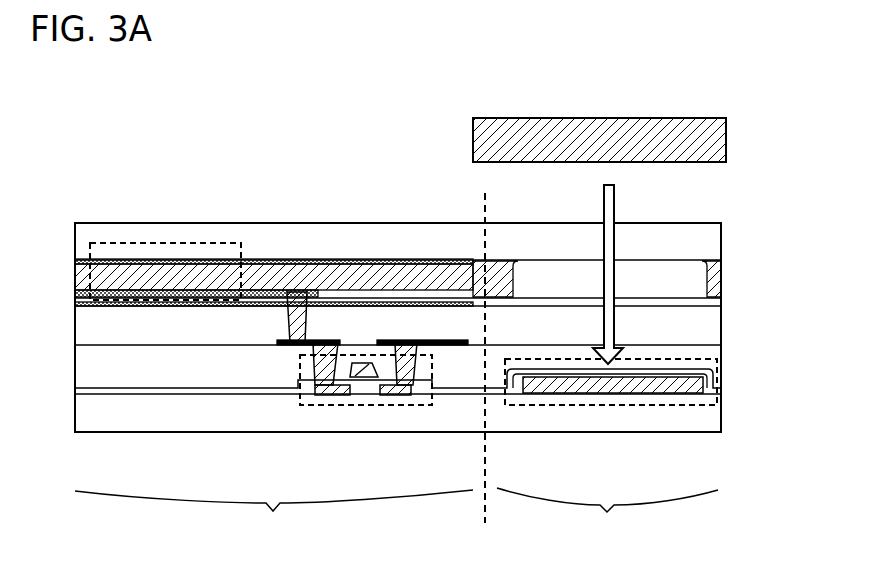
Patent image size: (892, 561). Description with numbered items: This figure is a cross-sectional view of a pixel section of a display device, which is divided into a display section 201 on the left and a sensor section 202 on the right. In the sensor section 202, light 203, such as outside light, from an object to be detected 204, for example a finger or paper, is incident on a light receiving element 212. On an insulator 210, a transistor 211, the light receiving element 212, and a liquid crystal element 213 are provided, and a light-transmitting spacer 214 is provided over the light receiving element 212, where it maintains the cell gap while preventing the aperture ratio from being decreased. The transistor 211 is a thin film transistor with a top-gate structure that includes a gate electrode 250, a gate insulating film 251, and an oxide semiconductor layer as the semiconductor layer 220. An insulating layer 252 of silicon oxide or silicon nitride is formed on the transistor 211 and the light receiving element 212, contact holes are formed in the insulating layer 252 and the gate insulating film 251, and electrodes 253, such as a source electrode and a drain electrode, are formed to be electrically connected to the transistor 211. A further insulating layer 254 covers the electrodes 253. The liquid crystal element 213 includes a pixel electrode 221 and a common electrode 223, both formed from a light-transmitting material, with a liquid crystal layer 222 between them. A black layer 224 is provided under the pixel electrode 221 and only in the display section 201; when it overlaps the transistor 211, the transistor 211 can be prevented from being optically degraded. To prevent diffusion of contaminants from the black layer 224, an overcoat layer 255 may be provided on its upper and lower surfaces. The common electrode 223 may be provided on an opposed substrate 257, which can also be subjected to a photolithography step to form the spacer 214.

The display section 201 is at (274, 520).
The sensor section 202 is at (607, 519).
The light 203 is at (611, 185).
The object to be detected 204 is at (528, 122).
The insulator 210 is at (692, 425).
The transistor 211 is at (418, 400).
The light receiving element 212 is at (622, 407).
The liquid crystal element 213 is at (118, 243).
The light-transmitting spacer 214 is at (698, 281).
The semiconductor layer 220 is at (318, 400).
The pixel electrode 221 is at (75, 296).
The liquid crystal layer 222 is at (313, 272).
The common electrode 223 is at (75, 262).
The black layer 224 is at (75, 308).
The gate electrode 250 is at (362, 372).
The gate insulating film 251 is at (237, 392).
The insulating layer 252 is at (163, 372).
The electrodes 253 is at (411, 342).
The insulating layer 254 is at (702, 338).
The overcoat layer 255 is at (703, 302).
The opposed substrate 257 is at (712, 240).